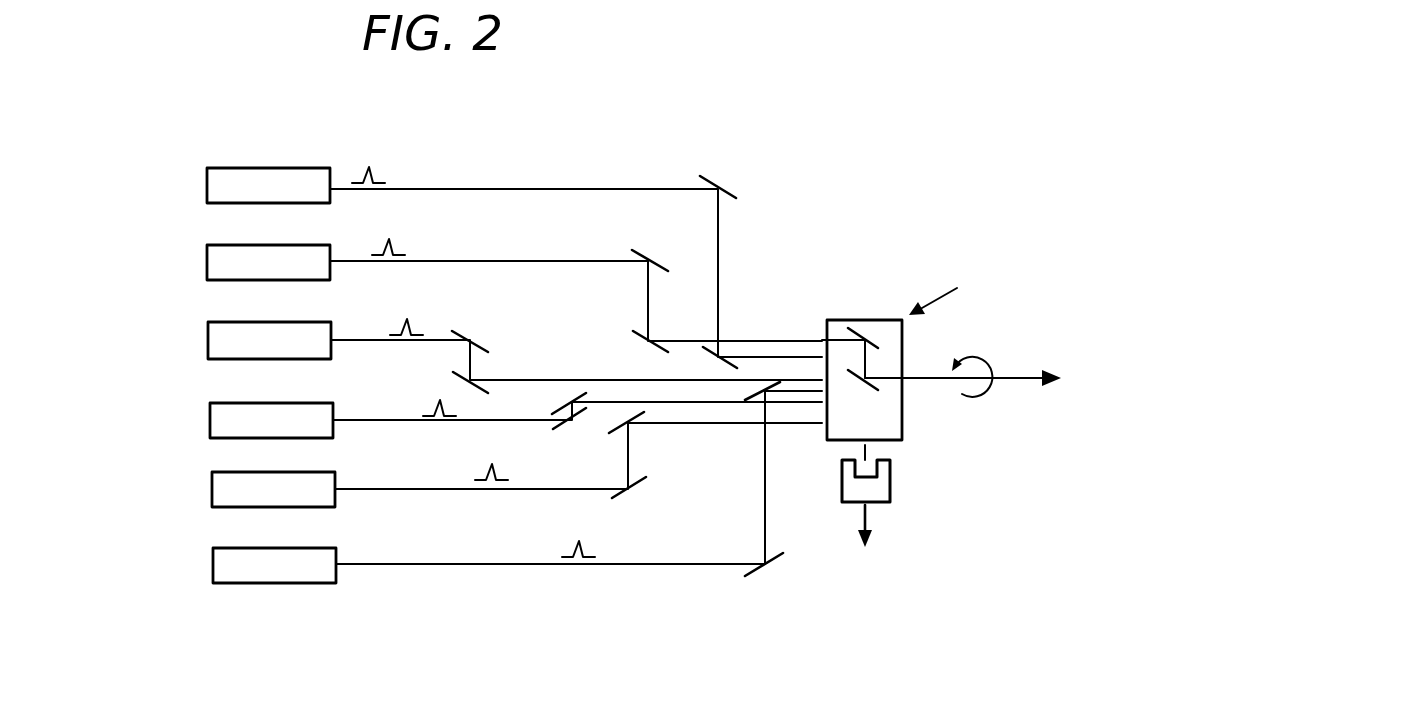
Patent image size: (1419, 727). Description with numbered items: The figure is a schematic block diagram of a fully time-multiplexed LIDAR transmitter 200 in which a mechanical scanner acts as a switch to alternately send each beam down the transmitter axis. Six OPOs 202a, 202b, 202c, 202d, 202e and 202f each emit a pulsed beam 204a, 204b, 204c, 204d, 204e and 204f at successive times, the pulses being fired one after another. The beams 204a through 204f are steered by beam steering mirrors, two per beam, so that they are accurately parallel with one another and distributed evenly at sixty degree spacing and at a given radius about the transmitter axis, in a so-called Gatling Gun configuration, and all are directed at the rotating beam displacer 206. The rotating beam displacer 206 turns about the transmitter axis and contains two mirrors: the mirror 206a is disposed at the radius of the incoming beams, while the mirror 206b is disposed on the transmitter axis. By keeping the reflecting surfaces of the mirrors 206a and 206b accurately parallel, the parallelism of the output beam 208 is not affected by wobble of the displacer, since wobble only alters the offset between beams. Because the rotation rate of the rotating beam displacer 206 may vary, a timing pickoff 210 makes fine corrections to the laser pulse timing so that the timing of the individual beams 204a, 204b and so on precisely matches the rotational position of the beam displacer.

The fully time-multiplexed transmitter 200 is at (775, 172).
The OPO 202a is at (207, 182).
The OPO 202b is at (207, 254).
The OPO 202c is at (208, 332).
The OPO 202d is at (210, 408).
The OPO 202e is at (212, 478).
The OPO 202f is at (213, 552).
The pulsed beam 204a is at (437, 189).
The pulsed beam 204b is at (462, 261).
The pulsed beam 204c is at (334, 341).
The pulsed beam 204d is at (345, 420).
The pulsed beam 204e is at (345, 489).
The pulsed beam 204f is at (357, 564).
The rotating beam displacer 206 is at (850, 320).
The mirror 206a is at (882, 346).
The mirror 206b is at (872, 384).
The output beam 208 is at (1020, 378).
The timing pickoff 210 is at (890, 480).